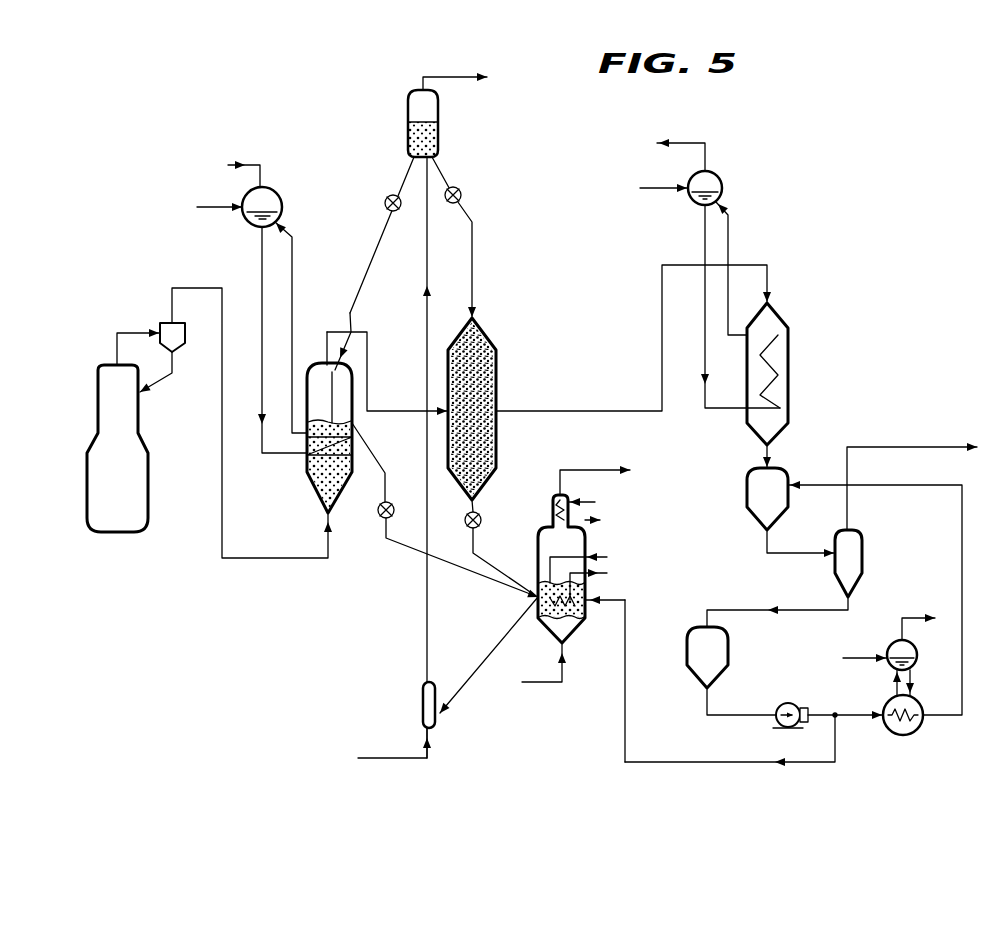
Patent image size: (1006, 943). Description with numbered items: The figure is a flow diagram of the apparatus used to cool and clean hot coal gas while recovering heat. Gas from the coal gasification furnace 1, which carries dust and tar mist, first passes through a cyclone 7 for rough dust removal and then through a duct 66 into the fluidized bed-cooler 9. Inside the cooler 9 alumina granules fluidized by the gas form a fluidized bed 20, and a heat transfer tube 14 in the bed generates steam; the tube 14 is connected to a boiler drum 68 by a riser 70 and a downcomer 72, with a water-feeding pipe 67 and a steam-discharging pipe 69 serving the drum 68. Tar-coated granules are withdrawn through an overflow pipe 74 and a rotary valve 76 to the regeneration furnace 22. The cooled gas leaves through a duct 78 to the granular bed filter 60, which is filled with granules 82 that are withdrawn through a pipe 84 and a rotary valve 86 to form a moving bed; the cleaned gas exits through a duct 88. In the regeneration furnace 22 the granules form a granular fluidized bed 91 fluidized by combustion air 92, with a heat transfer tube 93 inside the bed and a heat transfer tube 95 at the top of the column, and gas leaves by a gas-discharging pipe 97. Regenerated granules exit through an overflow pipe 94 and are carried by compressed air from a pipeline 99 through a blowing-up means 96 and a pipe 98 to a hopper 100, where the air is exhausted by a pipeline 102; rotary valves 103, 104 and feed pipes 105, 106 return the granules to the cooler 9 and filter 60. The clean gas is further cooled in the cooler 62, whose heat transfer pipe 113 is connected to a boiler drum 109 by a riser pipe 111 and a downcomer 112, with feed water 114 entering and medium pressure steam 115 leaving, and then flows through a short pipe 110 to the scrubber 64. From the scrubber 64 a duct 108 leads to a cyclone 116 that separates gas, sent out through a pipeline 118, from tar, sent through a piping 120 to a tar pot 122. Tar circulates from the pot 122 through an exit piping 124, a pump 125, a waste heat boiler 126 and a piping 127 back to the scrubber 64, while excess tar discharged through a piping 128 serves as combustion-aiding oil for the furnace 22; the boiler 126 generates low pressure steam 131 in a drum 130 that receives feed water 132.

The coal gasification furnace 1 is at (98, 392).
The cyclone 7 is at (196, 315).
The fluidized bed-cooler 9 is at (318, 495).
The heat transfer tube 14 is at (312, 458).
The fluidized bed 20 is at (340, 470).
The regeneration furnace 22 is at (585, 531).
The granular bed filter 60 is at (496, 375).
The cooler 62 is at (788, 355).
The scrubber 64 is at (747, 497).
The duct 66 is at (270, 559).
The water-feeding pipe 67 is at (210, 207).
The boiler drum 68 is at (275, 200).
The steam-discharging pipe 69 is at (255, 164).
The riser 70 is at (292, 305).
The downcomer 72 is at (262, 360).
The overflow pipe 74 is at (368, 450).
The rotary valve 76 is at (380, 525).
The duct 78 is at (367, 360).
The granules 82 is at (482, 362).
The pipe 84 is at (477, 507).
The rotary valve 86 is at (481, 524).
The duct 88 is at (584, 411).
The granular fluidized bed 91 is at (590, 597).
The combustion air 92 is at (538, 682).
The heat transfer tube 93 is at (607, 557).
The overflow pipe 94 is at (497, 640).
The heat transfer tube 95 is at (598, 502).
The blowing-up means 96 is at (423, 705).
The gas-discharging pipe 97 is at (584, 470).
The pipe 98 is at (427, 628).
The pipeline 99 is at (375, 758).
The hopper 100 is at (438, 135).
The pipeline 102 is at (440, 77).
The rotary valve 103 is at (386, 198).
The rotary valve 104 is at (460, 193).
The feed pipe 105 is at (366, 292).
The feed pipe 106 is at (472, 256).
The duct 108 is at (790, 555).
The boiler drum 109 is at (717, 181).
The short pipe 110 is at (772, 445).
The riser pipe 111 is at (728, 236).
The downcomer 112 is at (705, 300).
The heat transfer pipe 113 is at (780, 330).
The feed water 114 is at (655, 188).
The medium pressure steam 115 is at (686, 143).
The cyclone 116 is at (862, 552).
The pipeline 118 is at (893, 447).
The piping 120 is at (800, 610).
The tar pot 122 is at (728, 653).
The exit piping 124 is at (733, 717).
The pump 125 is at (795, 693).
The waste heat boiler 126 is at (903, 735).
The piping 127 is at (815, 487).
The piping 128 is at (660, 762).
The drum 130 is at (922, 648).
The steam 131 is at (910, 618).
The feed water 132 is at (855, 660).